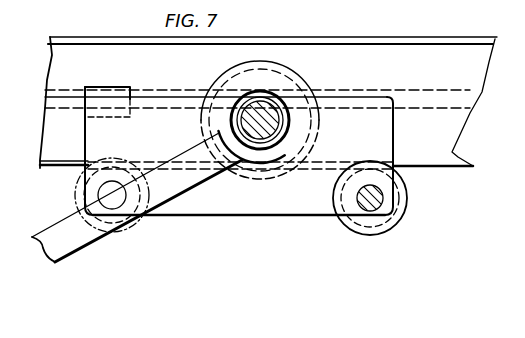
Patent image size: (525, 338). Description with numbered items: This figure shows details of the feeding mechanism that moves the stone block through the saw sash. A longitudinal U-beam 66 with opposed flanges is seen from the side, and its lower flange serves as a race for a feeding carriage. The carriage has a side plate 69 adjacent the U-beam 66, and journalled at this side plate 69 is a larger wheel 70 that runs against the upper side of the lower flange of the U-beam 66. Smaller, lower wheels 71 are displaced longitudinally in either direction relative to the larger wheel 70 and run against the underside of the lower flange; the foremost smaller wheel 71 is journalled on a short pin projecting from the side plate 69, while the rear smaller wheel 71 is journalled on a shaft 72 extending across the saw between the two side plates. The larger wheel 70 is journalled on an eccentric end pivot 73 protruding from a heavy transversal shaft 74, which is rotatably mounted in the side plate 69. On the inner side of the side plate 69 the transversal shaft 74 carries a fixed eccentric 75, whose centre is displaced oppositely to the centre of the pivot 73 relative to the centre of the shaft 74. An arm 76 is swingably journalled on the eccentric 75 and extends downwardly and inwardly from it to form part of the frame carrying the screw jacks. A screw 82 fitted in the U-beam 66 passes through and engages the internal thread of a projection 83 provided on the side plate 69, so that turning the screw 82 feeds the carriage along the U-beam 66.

The U-beam 66 is at (447, 60).
The side plate 69 is at (295, 200).
The larger wheel 70 is at (277, 82).
The smaller wheel 71 is at (137, 222).
The shaft 72 is at (383, 193).
The eccentric end pivot 73 is at (234, 110).
The transversal shaft 74 is at (268, 144).
The eccentric 75 is at (272, 137).
The arm 76 is at (190, 194).
The screw 82 is at (54, 101).
The projection 83 is at (102, 87).